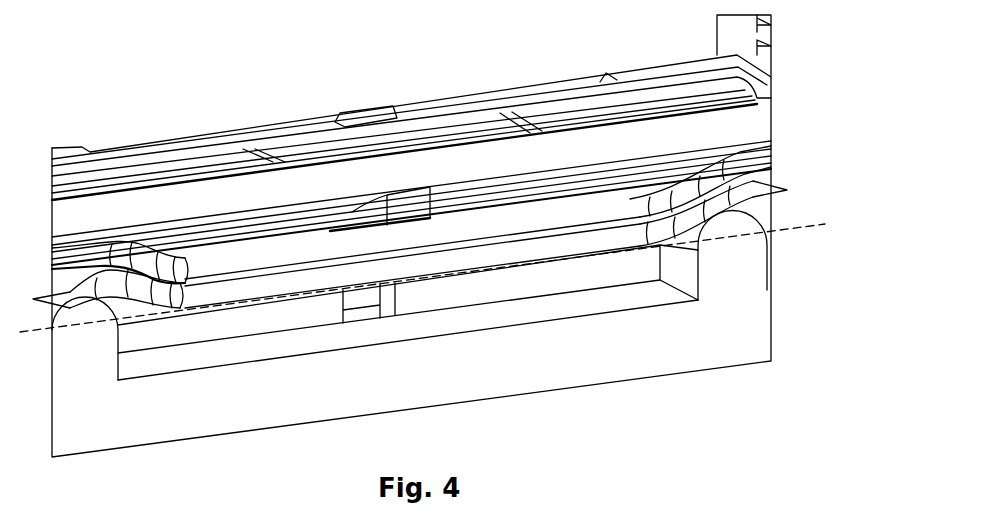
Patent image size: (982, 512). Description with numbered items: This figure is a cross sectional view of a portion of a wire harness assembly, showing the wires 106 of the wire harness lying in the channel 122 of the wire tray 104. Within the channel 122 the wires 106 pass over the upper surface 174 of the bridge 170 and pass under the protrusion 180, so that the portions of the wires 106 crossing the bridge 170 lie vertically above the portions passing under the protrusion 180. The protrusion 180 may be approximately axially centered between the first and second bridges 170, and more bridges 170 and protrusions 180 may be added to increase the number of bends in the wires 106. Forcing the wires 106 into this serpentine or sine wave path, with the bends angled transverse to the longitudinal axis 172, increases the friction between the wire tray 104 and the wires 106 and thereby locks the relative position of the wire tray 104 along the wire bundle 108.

The wire tray 104 is at (124, 95).
The wires 106 is at (757, 165).
The wire bundle 108 is at (540, 218).
The channel 122 is at (588, 272).
The bridge 170 is at (58, 346).
The longitudinal axis 172 is at (795, 232).
The upper surface 174 is at (733, 208).
The protrusion 180 is at (385, 220).